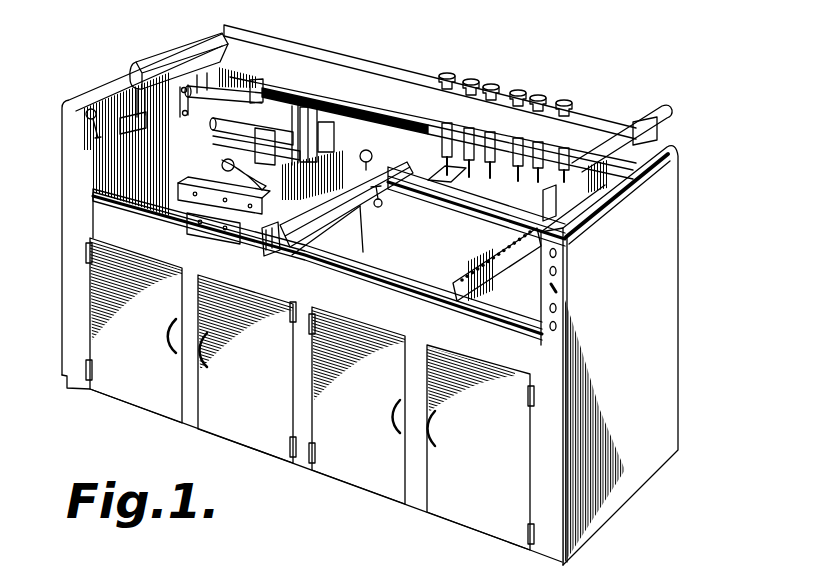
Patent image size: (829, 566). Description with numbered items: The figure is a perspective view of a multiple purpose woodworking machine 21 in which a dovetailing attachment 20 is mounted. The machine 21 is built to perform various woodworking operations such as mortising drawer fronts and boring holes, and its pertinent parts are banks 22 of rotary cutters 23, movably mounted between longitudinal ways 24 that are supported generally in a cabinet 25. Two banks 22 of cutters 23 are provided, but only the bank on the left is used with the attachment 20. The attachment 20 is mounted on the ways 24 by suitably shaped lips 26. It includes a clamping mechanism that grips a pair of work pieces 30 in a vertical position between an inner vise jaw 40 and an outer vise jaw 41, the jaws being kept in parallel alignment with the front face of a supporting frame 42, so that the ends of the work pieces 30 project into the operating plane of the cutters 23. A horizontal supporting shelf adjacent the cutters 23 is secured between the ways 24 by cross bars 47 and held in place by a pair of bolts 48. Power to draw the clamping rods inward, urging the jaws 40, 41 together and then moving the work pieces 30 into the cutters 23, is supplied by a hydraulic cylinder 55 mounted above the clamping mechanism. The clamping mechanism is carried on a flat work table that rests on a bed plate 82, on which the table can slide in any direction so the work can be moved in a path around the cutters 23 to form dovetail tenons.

The dovetailing attachment 20 is at (361, 210).
The woodworking machine 21 is at (636, 503).
The banks of rotary cutters 22 is at (362, 252).
The rotary cutters 23 is at (500, 249).
The longitudinal ways 24 is at (333, 262).
The cabinet 25 is at (670, 352).
The lips 26 is at (202, 232).
The work pieces 30 is at (332, 128).
The inner vise jaw 40 is at (352, 153).
The outer vise jaw 41 is at (372, 151).
The supporting frame 42 is at (258, 238).
The cross bars 47 is at (322, 224).
The bolts 48 is at (381, 206).
The hydraulic cylinder 55 is at (292, 140).
The bed plate 82 is at (186, 183).